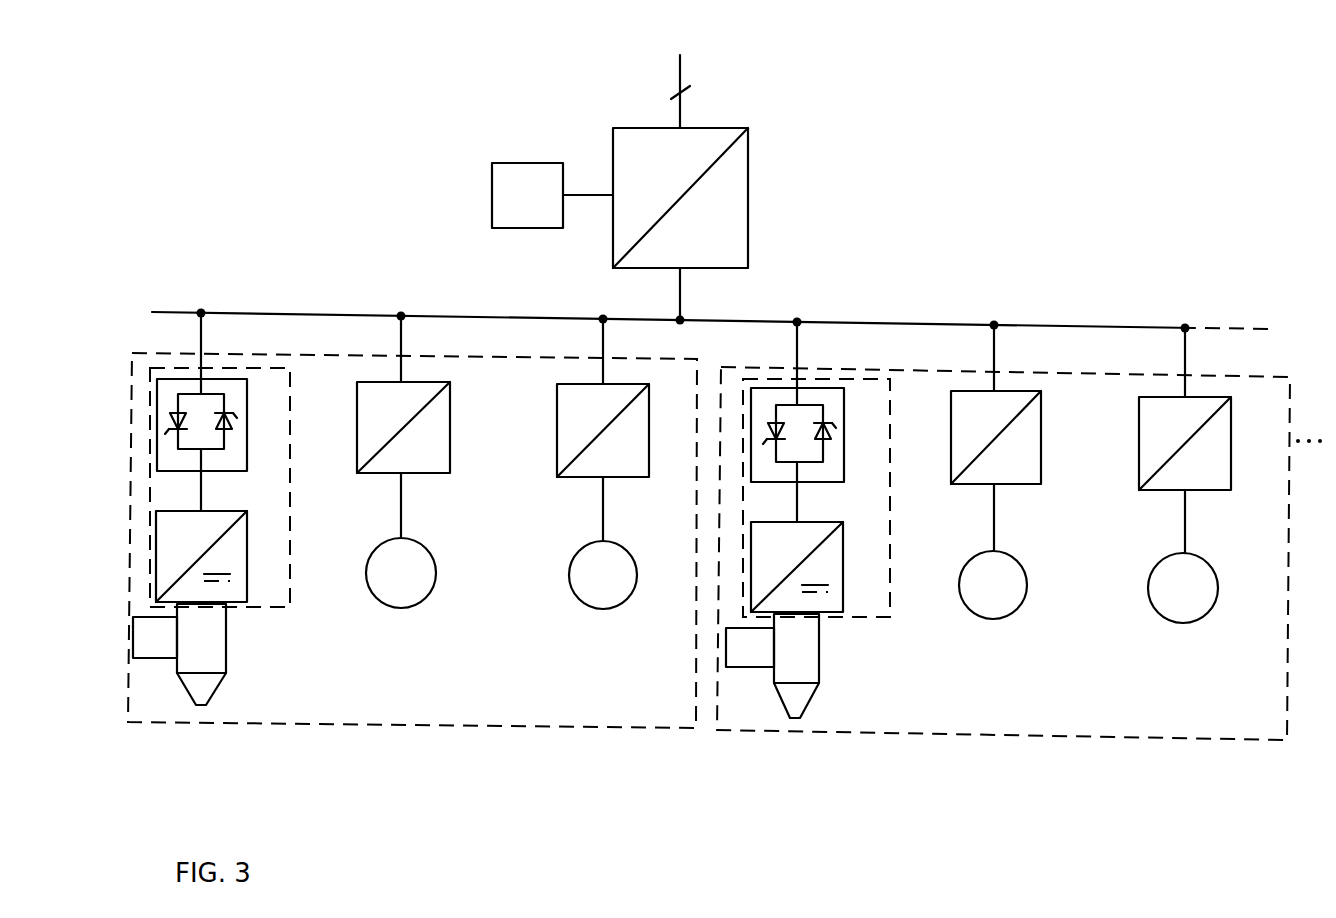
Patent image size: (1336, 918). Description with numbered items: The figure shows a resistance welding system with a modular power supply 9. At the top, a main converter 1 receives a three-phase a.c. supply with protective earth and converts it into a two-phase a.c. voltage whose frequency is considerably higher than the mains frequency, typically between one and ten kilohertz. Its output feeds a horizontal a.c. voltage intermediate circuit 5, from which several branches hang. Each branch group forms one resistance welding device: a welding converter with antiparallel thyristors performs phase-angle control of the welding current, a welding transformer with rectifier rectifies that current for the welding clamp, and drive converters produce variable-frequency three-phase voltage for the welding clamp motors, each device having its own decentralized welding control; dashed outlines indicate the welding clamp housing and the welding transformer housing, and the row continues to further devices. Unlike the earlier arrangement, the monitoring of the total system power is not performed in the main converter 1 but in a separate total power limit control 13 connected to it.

The main converter 1 is at (735, 182).
The a.c. voltage intermediate circuit 5 is at (845, 316).
The modular power supply 9 is at (910, 158).
The total power limit control 13 is at (541, 212).